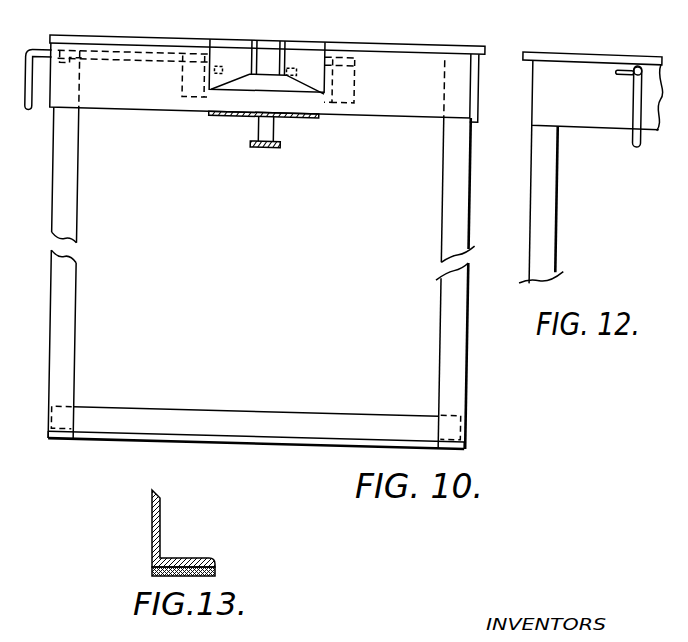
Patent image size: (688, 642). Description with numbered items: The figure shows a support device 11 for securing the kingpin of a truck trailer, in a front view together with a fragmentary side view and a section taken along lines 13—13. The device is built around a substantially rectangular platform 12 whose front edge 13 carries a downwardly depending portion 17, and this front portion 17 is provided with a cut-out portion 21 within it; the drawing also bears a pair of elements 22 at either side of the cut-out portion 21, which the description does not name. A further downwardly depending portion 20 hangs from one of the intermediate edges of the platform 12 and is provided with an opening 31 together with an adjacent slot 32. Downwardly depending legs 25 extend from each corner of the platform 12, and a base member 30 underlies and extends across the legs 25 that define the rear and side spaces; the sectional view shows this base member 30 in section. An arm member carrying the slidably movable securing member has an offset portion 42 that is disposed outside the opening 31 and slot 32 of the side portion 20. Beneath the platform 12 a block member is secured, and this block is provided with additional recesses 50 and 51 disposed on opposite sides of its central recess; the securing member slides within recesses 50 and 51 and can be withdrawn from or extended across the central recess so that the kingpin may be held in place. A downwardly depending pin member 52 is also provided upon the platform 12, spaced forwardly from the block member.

In FIG. 10, the support device 11 is at (64, 166).
In FIG. 10, the platform 12 is at (433, 49).
In FIG. 12, the platform 12 is at (573, 52).
In FIG. 10, the front edge 13 is at (276, 467).
In FIG. 10, the downwardly depending portion 17 is at (145, 100).
In FIG. 12, the downwardly depending portion 20 is at (565, 102).
In FIG. 10, the cut-out portion 21 is at (288, 99).
In FIG. 10, the brackets 22 is at (241, 50).
In FIG. 10, the legs 25 is at (70, 191).
In FIG. 12, the legs 25 is at (542, 205).
In FIG. 13, the base member 30 is at (152, 520).
In FIG. 12, the opening 31 is at (637, 60).
In FIG. 12, the slot 32 is at (618, 72).
In FIG. 12, the offset portion 42 is at (629, 136).
In FIG. 10, the recess 50 is at (243, 52).
In FIG. 10, the recess 51 is at (288, 52).
In FIG. 10, the pin member 52 is at (278, 135).